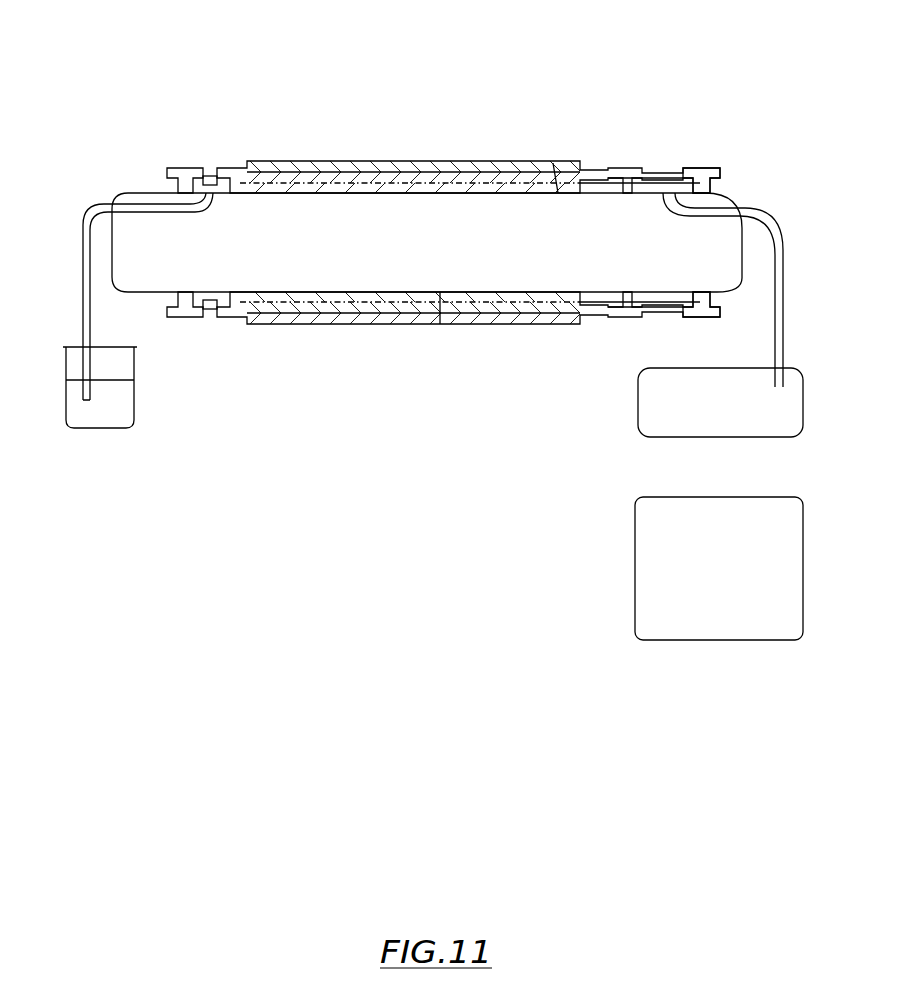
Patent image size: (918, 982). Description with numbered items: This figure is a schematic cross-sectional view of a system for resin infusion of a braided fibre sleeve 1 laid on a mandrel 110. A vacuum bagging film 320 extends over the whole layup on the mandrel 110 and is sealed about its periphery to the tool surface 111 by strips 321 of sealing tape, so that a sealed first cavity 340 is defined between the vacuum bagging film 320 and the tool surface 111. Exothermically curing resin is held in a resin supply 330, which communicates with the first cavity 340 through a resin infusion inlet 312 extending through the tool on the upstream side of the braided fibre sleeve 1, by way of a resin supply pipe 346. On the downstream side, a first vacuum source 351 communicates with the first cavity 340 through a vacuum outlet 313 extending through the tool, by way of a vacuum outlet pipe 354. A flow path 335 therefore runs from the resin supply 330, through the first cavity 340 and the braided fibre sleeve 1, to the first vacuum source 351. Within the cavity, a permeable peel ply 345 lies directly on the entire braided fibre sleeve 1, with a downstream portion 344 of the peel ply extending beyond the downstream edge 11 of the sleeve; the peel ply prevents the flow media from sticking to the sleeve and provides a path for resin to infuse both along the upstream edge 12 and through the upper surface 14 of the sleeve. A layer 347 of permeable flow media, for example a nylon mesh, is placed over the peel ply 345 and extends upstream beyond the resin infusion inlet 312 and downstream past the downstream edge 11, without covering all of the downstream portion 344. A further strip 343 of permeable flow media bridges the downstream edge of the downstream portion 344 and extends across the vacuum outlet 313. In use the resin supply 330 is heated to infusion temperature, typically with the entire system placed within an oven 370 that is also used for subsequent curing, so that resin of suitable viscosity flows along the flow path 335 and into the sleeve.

The braided fibre sleeve 1 is at (445, 292).
The downstream edge 11 is at (558, 193).
The upstream edge 12 is at (247, 185).
The upper surface 14 is at (343, 190).
The mandrel 110 is at (147, 292).
The tool surface 111 is at (225, 195).
The resin infusion inlet 312 is at (163, 193).
The vacuum outlet 313 is at (720, 190).
The vacuum bagging film 320 is at (315, 324).
The strip of sealing tape 321 is at (178, 192).
The resin supply 330 is at (115, 430).
The flow path 335 is at (214, 180).
The first cavity 340 is at (282, 192).
The strip of permeable flow media 343 is at (652, 193).
The downstream portion of peel ply 344 is at (590, 193).
The permeable peel ply 345 is at (535, 292).
The resin supply pipe 346 is at (80, 275).
The layer of permeable flow media 347 is at (385, 324).
The first vacuum source 351 is at (722, 417).
The vacuum outlet pipe 354 is at (779, 262).
The oven 370 is at (746, 582).